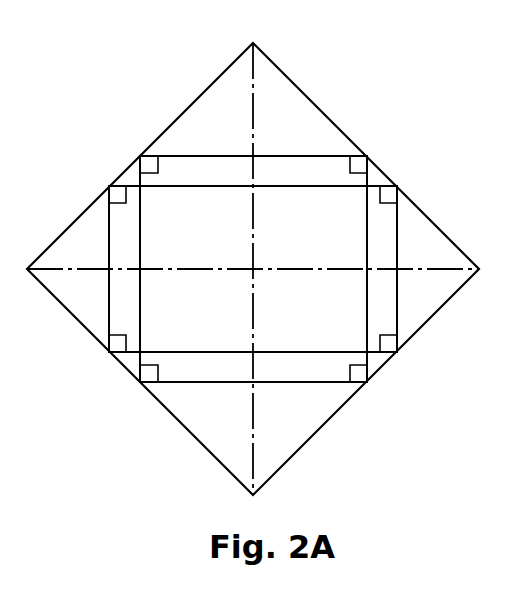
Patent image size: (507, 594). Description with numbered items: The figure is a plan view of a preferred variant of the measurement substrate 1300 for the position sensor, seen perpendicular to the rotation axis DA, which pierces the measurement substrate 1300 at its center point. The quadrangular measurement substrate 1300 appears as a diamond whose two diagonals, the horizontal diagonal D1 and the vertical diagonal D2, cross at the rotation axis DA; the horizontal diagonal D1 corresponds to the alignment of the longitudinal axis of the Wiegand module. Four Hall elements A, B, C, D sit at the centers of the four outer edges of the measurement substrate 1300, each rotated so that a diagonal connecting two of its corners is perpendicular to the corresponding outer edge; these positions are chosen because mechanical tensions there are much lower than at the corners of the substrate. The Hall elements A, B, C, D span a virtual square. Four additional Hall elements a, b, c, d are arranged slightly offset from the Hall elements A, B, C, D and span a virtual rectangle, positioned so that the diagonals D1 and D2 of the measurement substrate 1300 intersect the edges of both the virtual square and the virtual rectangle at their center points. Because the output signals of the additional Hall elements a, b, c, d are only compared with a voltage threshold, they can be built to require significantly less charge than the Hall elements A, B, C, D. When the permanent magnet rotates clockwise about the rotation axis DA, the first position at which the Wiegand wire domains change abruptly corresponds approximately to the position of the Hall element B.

The measurement substrate 1300 is at (369, 108).
The horizontal diagonal D1 is at (440, 269).
The diagonal D2 is at (256, 82).
The rotation axis DA is at (253, 269).
The Hall element A is at (140, 151).
The Hall element B is at (367, 150).
The Hall element C is at (367, 386).
The Hall element D is at (140, 386).
The additional Hall element a is at (111, 183).
The additional Hall element b is at (396, 182).
The additional Hall element c is at (396, 357).
The additional Hall element d is at (111, 357).